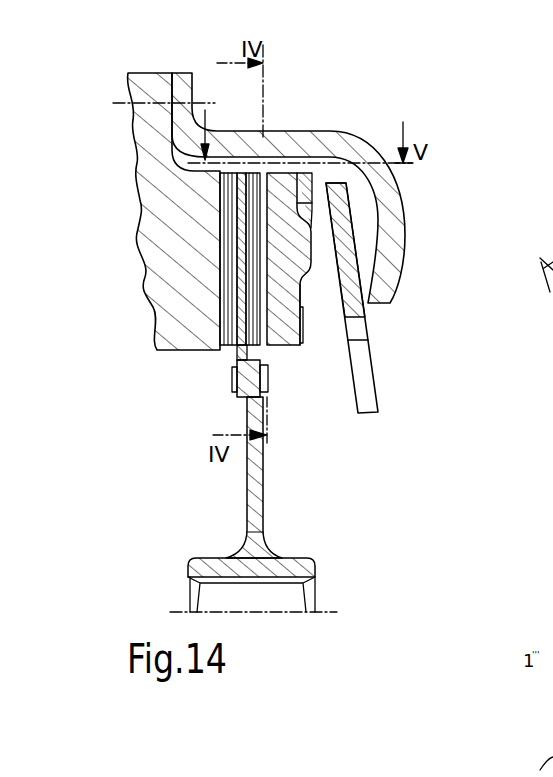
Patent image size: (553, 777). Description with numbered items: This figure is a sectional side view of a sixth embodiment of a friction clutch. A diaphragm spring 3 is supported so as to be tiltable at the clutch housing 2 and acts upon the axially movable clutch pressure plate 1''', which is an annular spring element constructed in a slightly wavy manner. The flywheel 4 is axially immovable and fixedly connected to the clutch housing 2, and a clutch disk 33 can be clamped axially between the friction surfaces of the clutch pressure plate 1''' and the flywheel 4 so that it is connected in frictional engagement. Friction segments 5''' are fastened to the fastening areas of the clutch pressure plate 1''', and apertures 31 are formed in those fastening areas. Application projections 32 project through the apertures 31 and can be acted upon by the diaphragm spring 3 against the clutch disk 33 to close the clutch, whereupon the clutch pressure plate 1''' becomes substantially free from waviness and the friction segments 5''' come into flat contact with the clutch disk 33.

The clutch housing 2 is at (390, 203).
The application projections 32 is at (320, 245).
The apertures 31 is at (318, 283).
The diaphragm spring 3 is at (358, 372).
The flywheel 4 is at (180, 315).
The friction segments 5''' is at (269, 329).
The clutch pressure plate 1''' is at (340, 338).
The clutch disk 33 is at (258, 499).